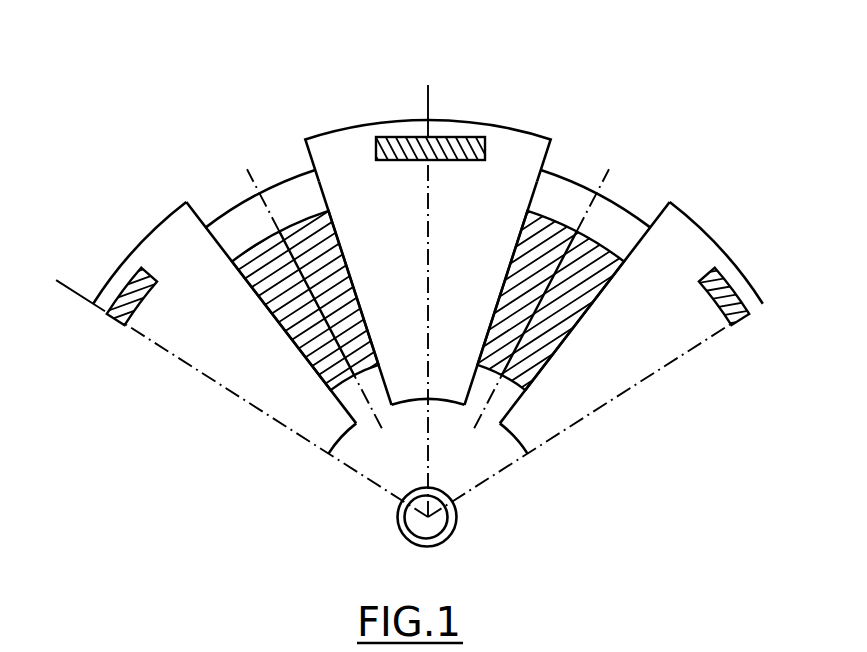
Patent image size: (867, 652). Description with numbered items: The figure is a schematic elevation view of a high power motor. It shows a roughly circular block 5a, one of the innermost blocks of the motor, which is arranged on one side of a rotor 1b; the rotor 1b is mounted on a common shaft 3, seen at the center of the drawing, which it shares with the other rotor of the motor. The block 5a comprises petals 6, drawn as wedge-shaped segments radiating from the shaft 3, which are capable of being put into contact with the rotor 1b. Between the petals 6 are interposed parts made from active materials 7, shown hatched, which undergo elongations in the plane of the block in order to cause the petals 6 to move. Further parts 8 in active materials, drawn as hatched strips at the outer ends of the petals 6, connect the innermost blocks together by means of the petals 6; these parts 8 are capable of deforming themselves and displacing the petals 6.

The rotor 1b is at (620, 226).
The common shaft 3 is at (453, 530).
The block 5a is at (521, 163).
The petals 6 is at (345, 148).
The active materials 7 is at (305, 240).
The parts in active materials 8 is at (462, 137).